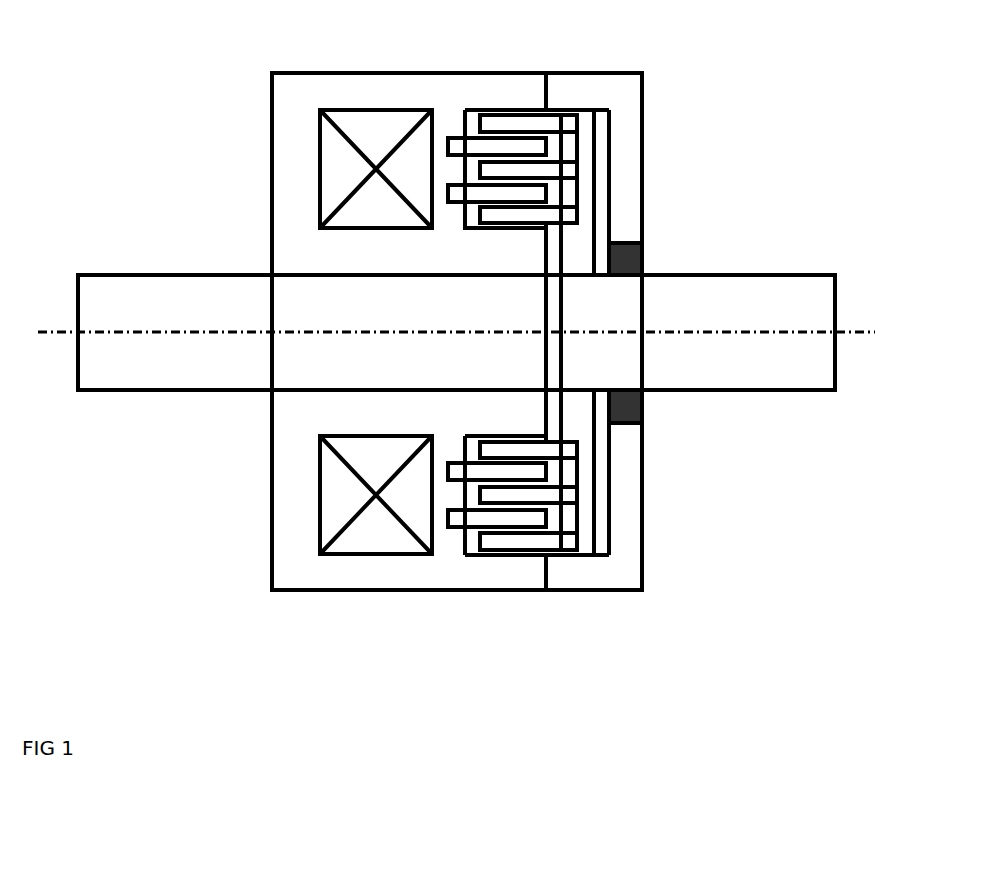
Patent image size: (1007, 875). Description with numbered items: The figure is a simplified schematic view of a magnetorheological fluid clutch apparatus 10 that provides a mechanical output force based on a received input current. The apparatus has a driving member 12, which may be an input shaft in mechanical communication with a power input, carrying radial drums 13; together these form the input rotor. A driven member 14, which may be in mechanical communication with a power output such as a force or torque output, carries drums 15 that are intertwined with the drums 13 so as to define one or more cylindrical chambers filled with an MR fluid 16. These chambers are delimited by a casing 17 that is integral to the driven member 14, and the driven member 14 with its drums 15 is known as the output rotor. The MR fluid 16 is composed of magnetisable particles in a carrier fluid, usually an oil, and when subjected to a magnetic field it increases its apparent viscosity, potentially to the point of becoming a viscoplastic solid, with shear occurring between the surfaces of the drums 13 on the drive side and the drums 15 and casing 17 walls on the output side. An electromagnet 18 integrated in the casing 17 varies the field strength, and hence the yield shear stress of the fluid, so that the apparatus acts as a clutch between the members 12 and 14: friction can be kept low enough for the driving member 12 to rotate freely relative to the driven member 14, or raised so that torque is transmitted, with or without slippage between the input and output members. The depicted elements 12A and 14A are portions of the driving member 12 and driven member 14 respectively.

The MR fluid clutch apparatus 10 is at (143, 122).
The driving member 12 is at (695, 232).
The shaft cylindrical portion 12A is at (590, 207).
The radial drums 13 is at (524, 218).
The driven member 14 is at (197, 232).
The housing fins 14A is at (452, 118).
The drums 15 is at (474, 130).
The MR fluid 16 is at (592, 148).
The casing 17 is at (613, 80).
The electromagnet 18 is at (368, 128).